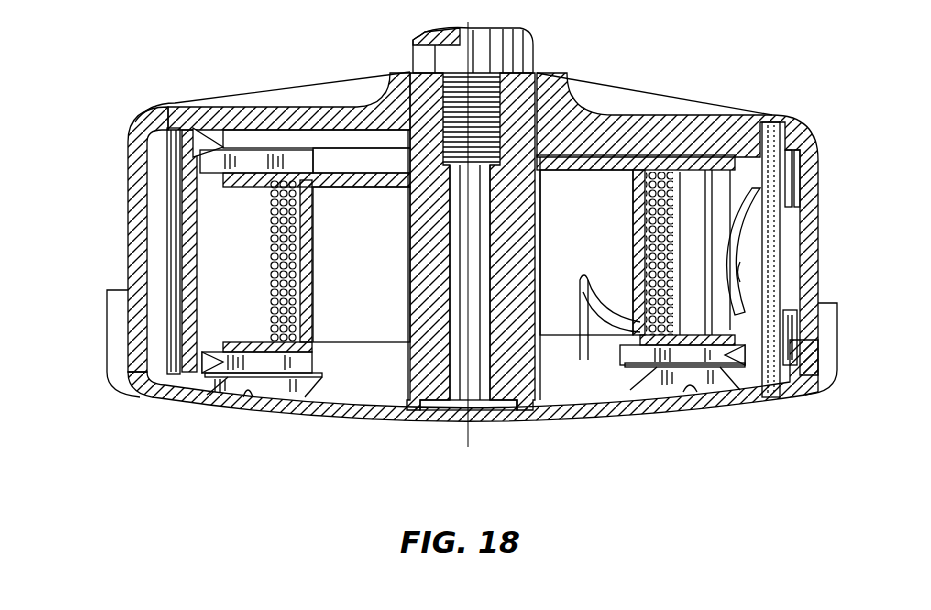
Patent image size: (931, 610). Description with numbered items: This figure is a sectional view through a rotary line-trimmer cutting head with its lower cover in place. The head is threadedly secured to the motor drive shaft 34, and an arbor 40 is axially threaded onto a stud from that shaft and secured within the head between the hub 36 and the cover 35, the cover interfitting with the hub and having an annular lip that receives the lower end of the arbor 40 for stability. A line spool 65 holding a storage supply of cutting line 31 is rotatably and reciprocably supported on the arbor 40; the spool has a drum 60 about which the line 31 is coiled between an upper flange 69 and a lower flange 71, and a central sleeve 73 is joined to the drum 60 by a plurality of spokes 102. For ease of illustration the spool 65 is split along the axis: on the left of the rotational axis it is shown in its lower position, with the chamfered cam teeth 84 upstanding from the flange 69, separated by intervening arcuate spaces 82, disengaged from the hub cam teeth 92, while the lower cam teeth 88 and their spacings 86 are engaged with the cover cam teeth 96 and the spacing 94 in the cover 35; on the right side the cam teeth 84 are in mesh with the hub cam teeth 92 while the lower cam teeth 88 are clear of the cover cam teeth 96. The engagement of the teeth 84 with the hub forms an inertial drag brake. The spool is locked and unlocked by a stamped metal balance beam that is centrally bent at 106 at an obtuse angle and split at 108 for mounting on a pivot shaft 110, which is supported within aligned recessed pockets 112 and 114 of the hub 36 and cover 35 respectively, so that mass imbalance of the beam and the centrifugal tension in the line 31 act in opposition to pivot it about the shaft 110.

The motor drive shaft 34 is at (412, 56).
The hub 36 is at (135, 105).
The hub cam teeth 92 is at (247, 125).
The flange 69 is at (260, 177).
The cam teeth 84 is at (128, 158).
The arcuate spaces 82 is at (236, 178).
The line spool 65 is at (258, 210).
The cutting line 31 is at (270, 240).
The spokes 102 is at (376, 222).
The sleeve 73 is at (410, 258).
The drum 60 is at (303, 315).
The flange 71 is at (310, 357).
The cover 35 is at (137, 395).
The spacings 86 is at (230, 382).
The spacing 94 is at (248, 387).
The lower cam teeth 88 is at (290, 390).
The cover cam teeth 96 is at (288, 378).
The arbor 40 is at (508, 290).
The recessed pocket 112 is at (787, 145).
The central bend 106 is at (790, 175).
The pivot shaft 110 is at (777, 193).
The split 108 is at (753, 270).
The recessed pocket 114 is at (758, 413).